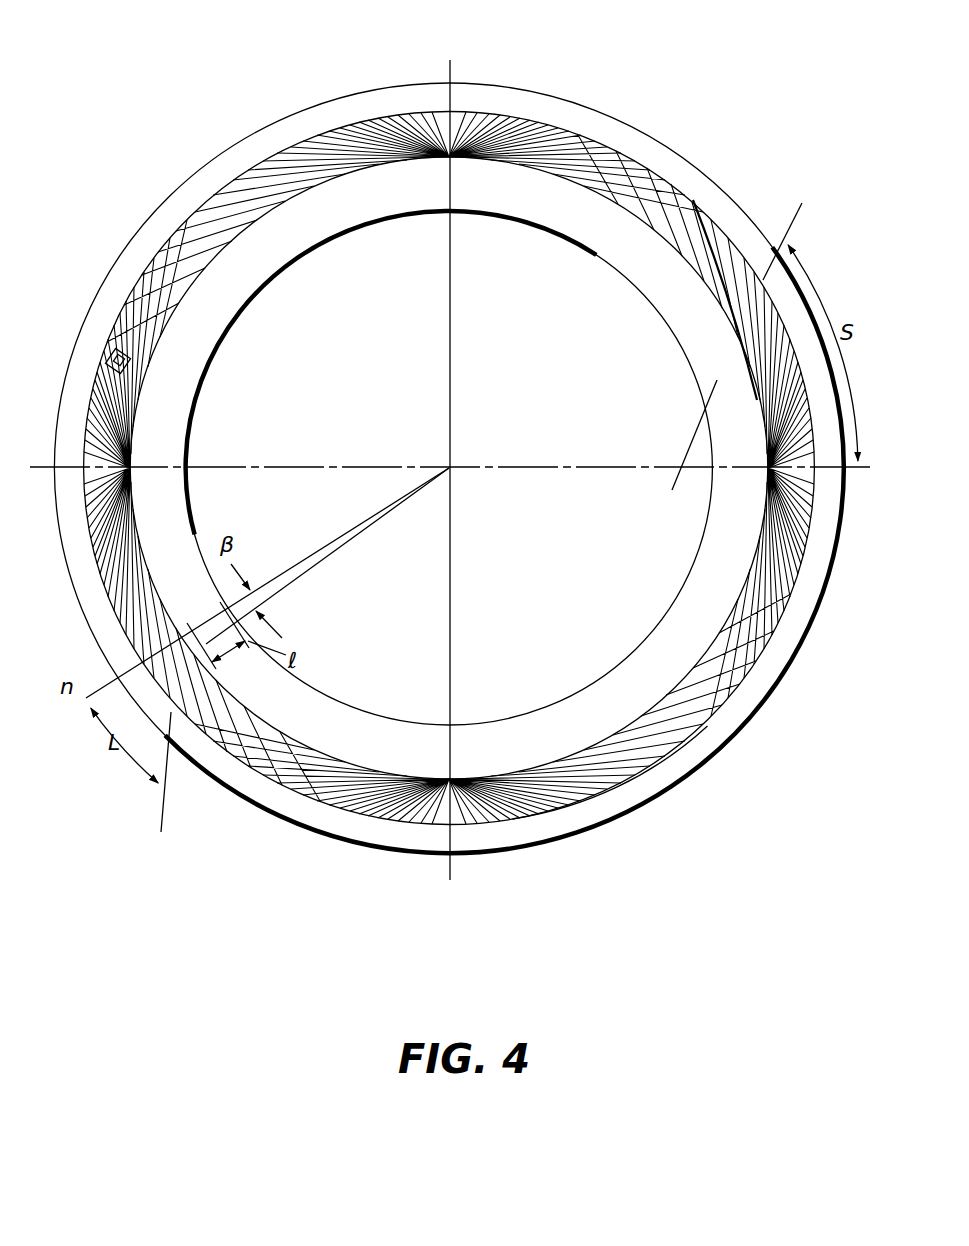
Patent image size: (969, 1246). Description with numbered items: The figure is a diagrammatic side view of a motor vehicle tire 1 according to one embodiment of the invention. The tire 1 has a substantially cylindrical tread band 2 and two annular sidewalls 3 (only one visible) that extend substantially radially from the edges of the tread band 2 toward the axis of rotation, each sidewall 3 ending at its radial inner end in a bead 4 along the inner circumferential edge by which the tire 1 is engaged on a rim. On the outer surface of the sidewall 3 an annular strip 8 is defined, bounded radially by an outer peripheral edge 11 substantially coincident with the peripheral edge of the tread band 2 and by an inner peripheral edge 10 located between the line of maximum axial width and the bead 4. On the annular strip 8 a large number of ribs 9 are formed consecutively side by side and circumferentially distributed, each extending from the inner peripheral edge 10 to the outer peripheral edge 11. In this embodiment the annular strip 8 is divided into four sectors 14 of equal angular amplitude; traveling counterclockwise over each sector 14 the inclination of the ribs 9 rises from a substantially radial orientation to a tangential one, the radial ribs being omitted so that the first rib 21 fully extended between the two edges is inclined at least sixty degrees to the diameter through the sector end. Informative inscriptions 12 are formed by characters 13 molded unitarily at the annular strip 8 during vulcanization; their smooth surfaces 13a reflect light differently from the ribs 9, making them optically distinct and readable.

The tire 1 is at (657, 102).
The tread band 2 is at (732, 180).
The sidewall 3 is at (620, 244).
The bead 4 is at (680, 606).
The annular strip 8 is at (572, 182).
The ribs 9 is at (340, 800).
The inner peripheral edge 10 is at (620, 725).
The outer peripheral edge 11 is at (642, 770).
The informative inscriptions 12 is at (138, 272).
The characters 13 is at (136, 372).
The smooth surfaces 13a is at (134, 364).
The sectors 14 is at (165, 228).
The first rib 21 is at (755, 300).